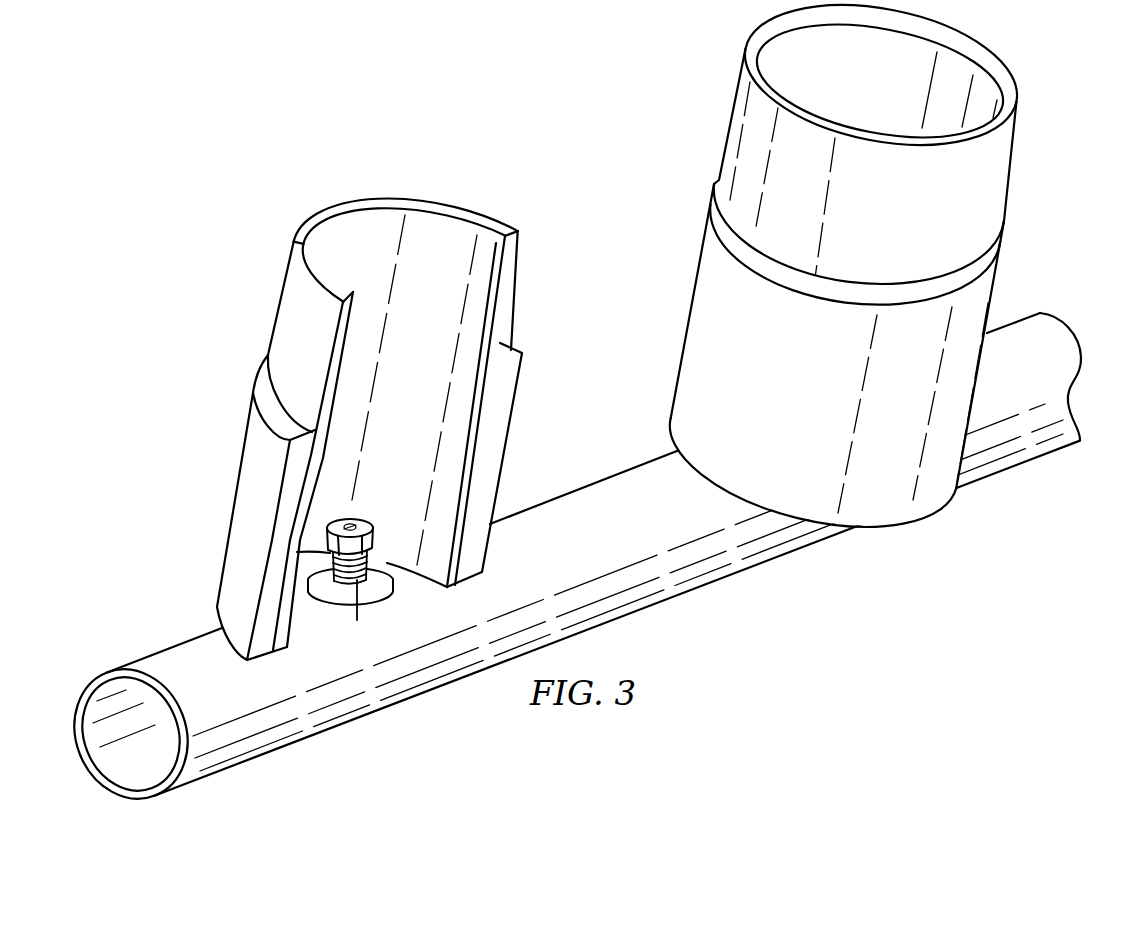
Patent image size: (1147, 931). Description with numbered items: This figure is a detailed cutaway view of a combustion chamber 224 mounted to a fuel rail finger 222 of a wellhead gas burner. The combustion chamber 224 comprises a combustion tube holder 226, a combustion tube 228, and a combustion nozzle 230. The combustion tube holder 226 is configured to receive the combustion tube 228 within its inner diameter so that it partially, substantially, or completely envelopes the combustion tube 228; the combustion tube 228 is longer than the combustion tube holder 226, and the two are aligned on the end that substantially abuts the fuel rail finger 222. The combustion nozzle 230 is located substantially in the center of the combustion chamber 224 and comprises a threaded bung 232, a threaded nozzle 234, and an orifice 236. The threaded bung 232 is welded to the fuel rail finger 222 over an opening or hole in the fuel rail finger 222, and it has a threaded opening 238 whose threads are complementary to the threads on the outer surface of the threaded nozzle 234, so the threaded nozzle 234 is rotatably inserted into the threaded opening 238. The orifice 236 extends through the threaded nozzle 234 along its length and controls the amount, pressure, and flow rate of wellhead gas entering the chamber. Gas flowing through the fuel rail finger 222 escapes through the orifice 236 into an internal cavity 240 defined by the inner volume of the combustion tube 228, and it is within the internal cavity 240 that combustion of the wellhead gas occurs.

The fuel rail finger 222 is at (158, 653).
The combustion chamber 224 is at (236, 427).
The combustion tube holder 226 is at (238, 493).
The combustion tube 228 is at (284, 283).
The combustion nozzle 230 is at (380, 548).
The threaded bung 232 is at (392, 588).
The threaded nozzle 234 is at (375, 541).
The orifice 236 is at (348, 523).
The threaded opening 238 is at (357, 618).
The internal cavity 240 is at (446, 275).